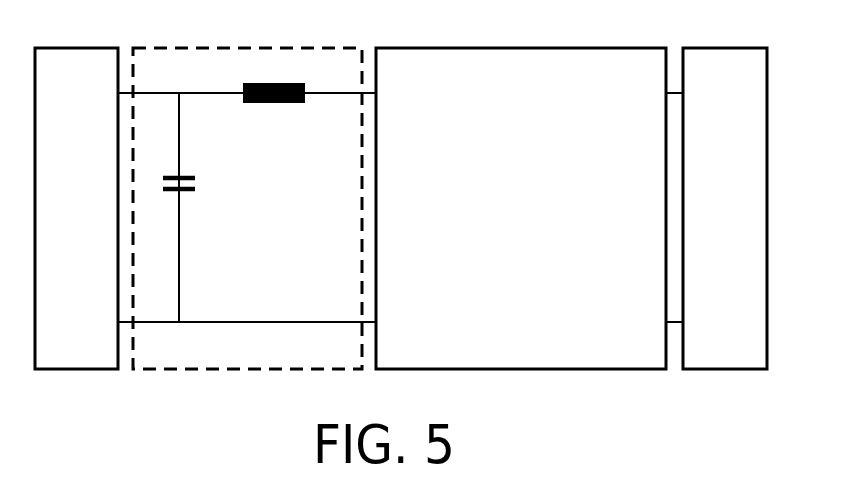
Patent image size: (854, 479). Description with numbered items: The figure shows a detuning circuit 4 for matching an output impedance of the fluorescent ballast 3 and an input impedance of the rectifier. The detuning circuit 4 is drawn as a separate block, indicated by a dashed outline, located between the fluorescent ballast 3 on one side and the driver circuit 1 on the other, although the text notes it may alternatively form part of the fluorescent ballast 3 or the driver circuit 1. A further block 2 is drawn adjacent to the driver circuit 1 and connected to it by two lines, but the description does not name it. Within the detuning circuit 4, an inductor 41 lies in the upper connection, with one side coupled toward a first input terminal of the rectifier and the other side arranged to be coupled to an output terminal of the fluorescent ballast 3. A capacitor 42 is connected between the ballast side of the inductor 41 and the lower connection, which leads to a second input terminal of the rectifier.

The driver circuit 1 is at (402, 80).
The second unit 2 is at (733, 80).
The fluorescent ballast 3 is at (84, 80).
The detuning circuit 4 is at (163, 80).
The inductor 41 is at (268, 104).
The capacitor 42 is at (185, 192).